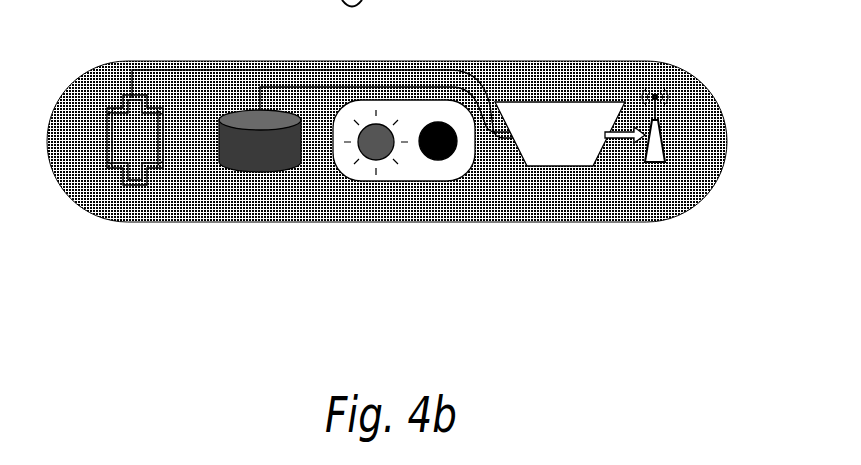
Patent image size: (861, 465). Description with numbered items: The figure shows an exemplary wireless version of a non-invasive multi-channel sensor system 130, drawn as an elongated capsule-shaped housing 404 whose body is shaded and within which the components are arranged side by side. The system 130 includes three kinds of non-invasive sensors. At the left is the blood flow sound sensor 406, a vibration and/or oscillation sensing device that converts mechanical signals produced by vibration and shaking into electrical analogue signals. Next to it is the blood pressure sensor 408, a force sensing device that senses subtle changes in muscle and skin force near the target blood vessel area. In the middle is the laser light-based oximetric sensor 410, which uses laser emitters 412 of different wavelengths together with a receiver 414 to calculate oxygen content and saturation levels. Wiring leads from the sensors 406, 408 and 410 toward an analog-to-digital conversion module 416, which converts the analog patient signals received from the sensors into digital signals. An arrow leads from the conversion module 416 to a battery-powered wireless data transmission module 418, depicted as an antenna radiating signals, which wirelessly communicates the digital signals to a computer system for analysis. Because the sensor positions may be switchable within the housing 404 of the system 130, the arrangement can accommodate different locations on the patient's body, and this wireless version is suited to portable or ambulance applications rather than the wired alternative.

The multi-channel sensor system 130 is at (657, 78).
The device housing 404 is at (148, 200).
The blood flow sound sensor 406 is at (105, 170).
The blood pressure sensor 408 is at (238, 158).
The oximetric sensor 410 is at (337, 165).
The laser emitters 412 is at (372, 162).
The receiver 414 is at (437, 161).
The analog-to-digital conversion module 416 is at (560, 134).
The wireless data transmission module 418 is at (651, 163).